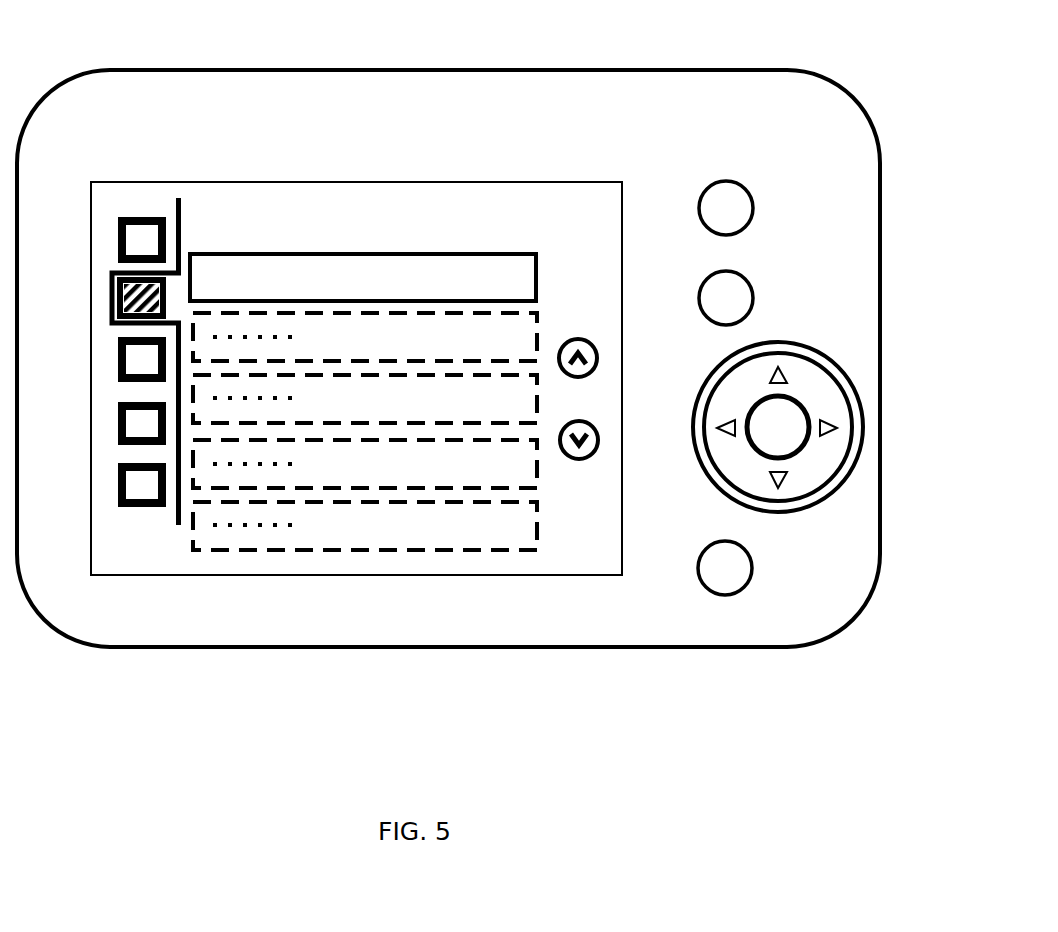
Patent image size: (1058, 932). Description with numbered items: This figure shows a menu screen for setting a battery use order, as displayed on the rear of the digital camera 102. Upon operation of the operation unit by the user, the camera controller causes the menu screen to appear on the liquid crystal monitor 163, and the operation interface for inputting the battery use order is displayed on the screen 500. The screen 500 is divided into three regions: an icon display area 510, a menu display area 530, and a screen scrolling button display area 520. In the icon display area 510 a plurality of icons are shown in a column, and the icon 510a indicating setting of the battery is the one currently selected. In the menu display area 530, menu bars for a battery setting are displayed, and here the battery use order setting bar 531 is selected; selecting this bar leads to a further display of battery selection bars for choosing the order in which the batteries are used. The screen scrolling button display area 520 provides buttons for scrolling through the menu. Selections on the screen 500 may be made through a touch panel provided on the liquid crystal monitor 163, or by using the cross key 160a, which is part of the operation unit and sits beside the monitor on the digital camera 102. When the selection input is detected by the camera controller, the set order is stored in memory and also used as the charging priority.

The digital camera 102 is at (708, 72).
The cross key 160a is at (787, 343).
The liquid crystal monitor 163 is at (593, 182).
The screen 500 is at (567, 236).
The icon display area 510 is at (107, 336).
The icon 510a is at (110, 317).
The menu display area 530 is at (290, 200).
The battery use order setting bar 531 is at (365, 252).
The screen scrolling button display area 520 is at (577, 323).